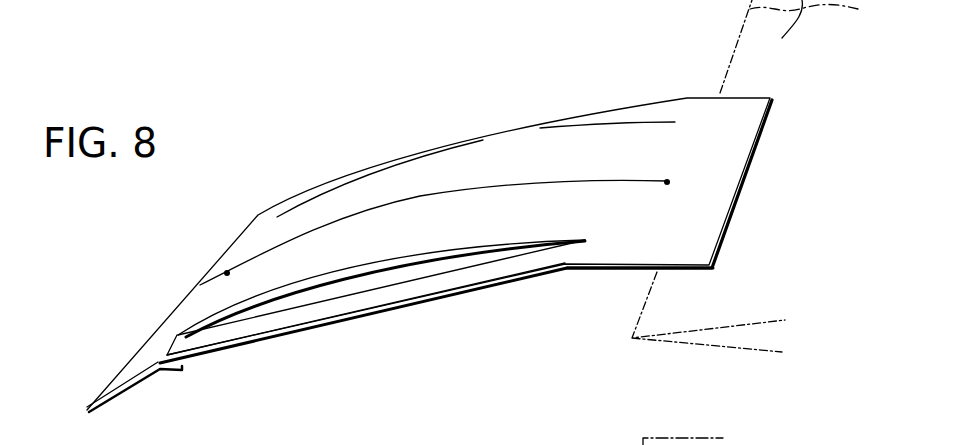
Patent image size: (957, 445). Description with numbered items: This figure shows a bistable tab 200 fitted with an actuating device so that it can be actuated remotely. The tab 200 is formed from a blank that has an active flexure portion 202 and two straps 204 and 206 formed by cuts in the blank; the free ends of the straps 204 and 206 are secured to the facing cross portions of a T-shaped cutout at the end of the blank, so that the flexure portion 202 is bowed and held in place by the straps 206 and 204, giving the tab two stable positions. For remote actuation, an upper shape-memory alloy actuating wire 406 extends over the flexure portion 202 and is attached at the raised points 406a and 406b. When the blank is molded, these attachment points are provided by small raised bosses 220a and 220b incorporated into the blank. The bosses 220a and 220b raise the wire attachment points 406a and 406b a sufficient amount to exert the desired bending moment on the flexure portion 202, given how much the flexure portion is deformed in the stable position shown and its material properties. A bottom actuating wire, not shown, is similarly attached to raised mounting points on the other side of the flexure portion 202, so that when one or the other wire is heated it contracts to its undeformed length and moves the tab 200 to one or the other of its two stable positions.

The tab 200 is at (660, 103).
The flexure portion 202 is at (467, 218).
The strap 204 is at (340, 182).
The strap 206 is at (343, 307).
The upper shape-memory alloy actuating wire 406 is at (488, 187).
The raised point 406a is at (227, 273).
The raised point 406b is at (667, 182).
The raised boss 220a is at (230, 287).
The raised boss 220b is at (664, 196).